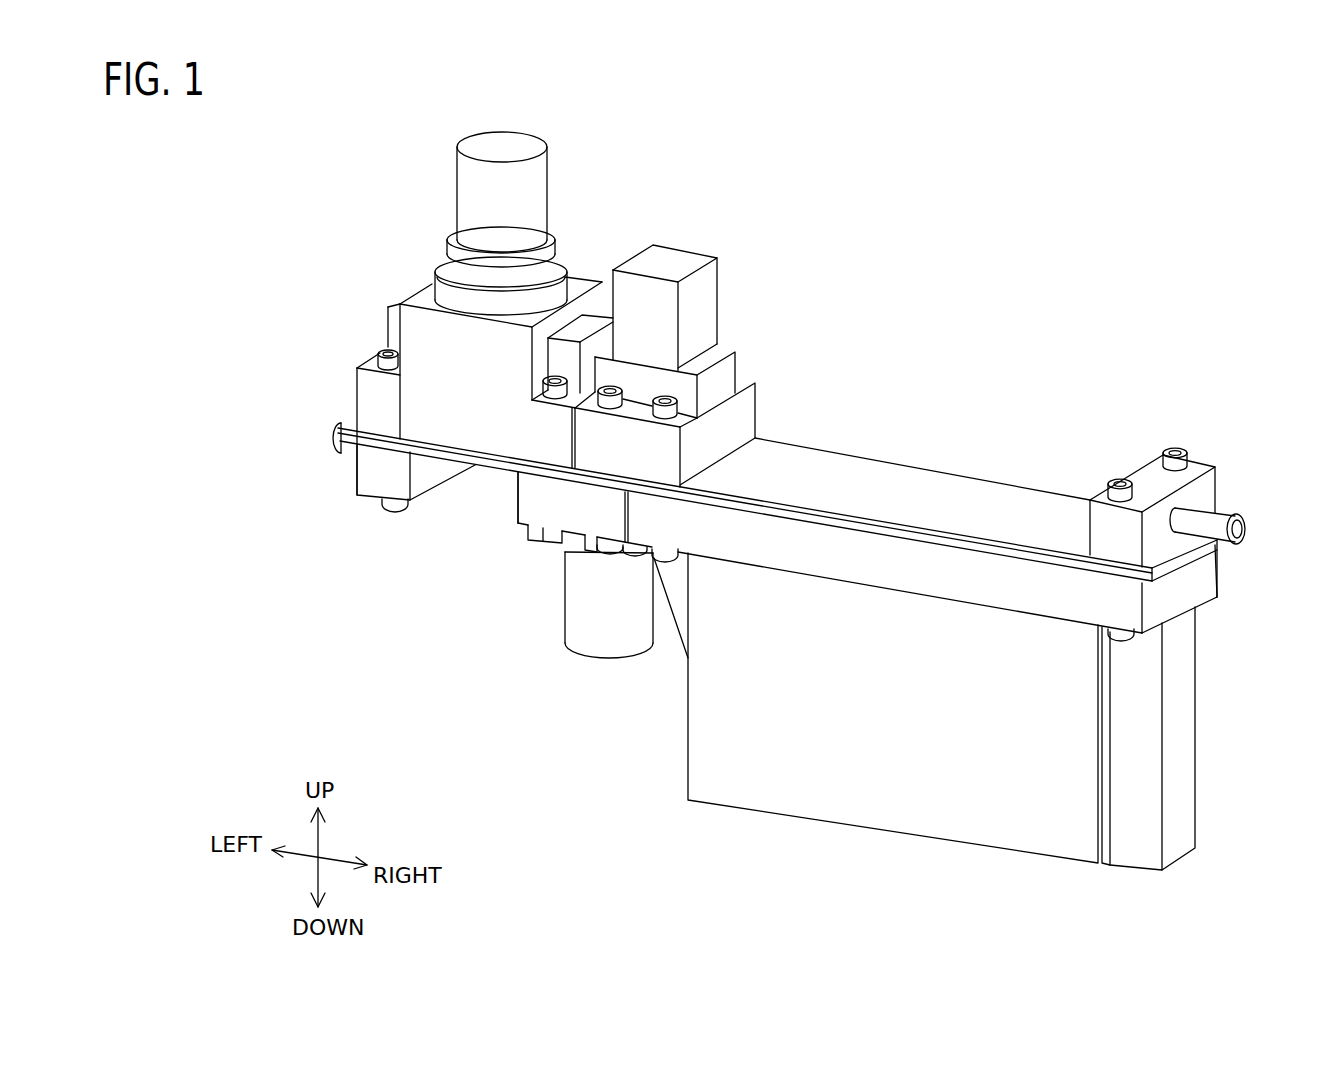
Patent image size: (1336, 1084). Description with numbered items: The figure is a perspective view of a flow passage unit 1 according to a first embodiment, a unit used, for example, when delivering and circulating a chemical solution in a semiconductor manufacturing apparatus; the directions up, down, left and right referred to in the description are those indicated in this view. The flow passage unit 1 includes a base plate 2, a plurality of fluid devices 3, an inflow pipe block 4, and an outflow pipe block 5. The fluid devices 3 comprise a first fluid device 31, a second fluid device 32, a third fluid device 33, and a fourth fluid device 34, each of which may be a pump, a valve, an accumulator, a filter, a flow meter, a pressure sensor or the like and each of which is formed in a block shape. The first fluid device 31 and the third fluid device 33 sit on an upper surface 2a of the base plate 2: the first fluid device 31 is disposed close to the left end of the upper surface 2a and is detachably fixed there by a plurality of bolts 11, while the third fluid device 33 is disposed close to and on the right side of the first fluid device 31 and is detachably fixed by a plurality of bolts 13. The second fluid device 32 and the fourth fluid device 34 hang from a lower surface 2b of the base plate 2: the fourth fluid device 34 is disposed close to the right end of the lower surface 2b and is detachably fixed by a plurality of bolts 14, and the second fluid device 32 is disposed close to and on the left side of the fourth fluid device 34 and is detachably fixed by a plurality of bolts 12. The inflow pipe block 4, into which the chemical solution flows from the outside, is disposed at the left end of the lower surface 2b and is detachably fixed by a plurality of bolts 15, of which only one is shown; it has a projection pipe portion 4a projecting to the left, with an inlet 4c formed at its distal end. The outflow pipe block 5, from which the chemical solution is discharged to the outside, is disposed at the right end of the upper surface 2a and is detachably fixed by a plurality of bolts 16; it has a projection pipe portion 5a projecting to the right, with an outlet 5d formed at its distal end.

The flow passage unit 1 is at (305, 186).
The base plate 2 is at (928, 468).
The upper surface 2a is at (992, 498).
The lower surface 2b is at (490, 478).
The fluid devices 3 is at (765, 501).
The inflow pipe block 4 is at (352, 488).
The projection pipe portion 4a is at (352, 457).
The inlet 4c is at (334, 432).
The outflow pipe block 5 is at (1208, 468).
The projection pipe portion 5a is at (1226, 508).
The outlet 5d is at (1247, 528).
The bolts 11 is at (376, 360).
The bolts 12 is at (588, 552).
The bolts 13 is at (612, 385).
The bolts 14 is at (652, 562).
The bolts 15 is at (393, 513).
The bolts 16 is at (1120, 478).
The first fluid device 31 is at (388, 318).
The second fluid device 32 is at (578, 628).
The third fluid device 33 is at (726, 372).
The fourth fluid device 34 is at (688, 760).